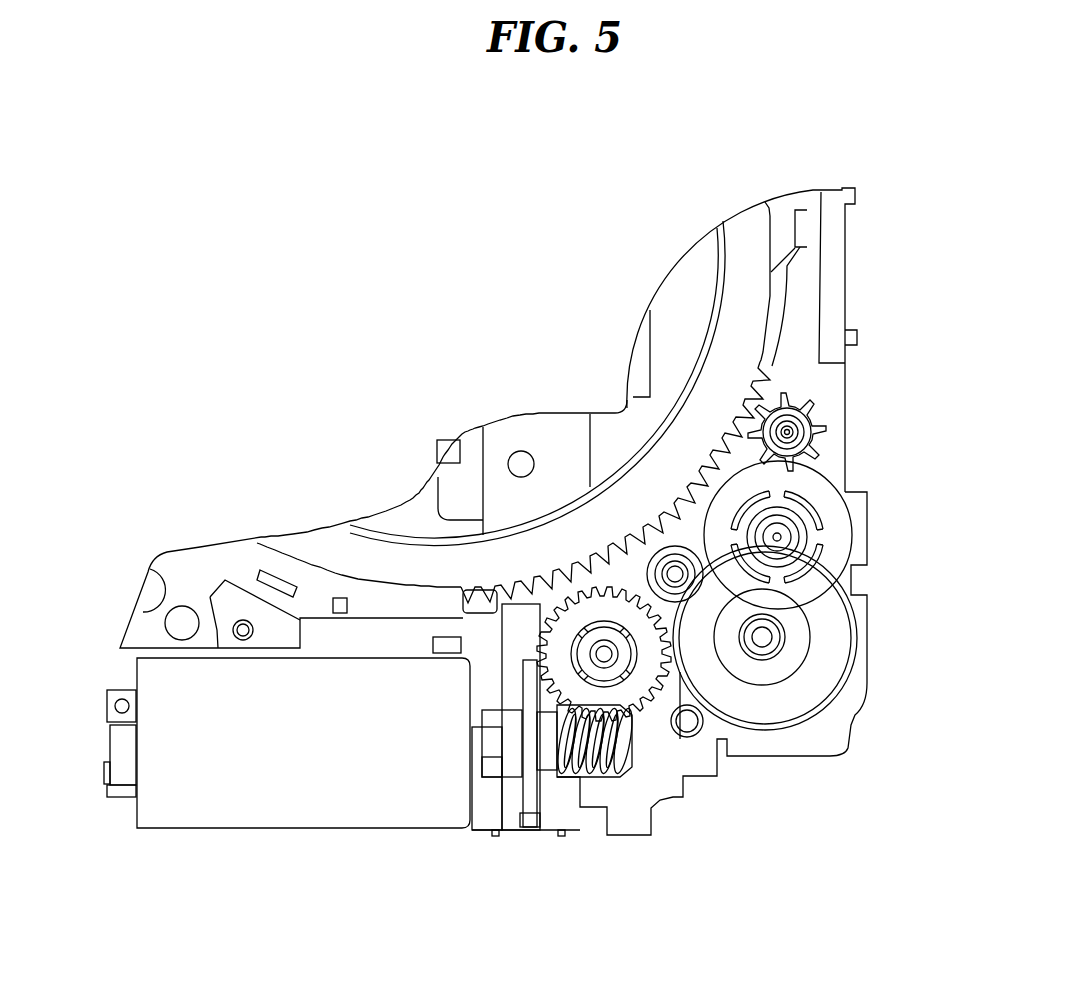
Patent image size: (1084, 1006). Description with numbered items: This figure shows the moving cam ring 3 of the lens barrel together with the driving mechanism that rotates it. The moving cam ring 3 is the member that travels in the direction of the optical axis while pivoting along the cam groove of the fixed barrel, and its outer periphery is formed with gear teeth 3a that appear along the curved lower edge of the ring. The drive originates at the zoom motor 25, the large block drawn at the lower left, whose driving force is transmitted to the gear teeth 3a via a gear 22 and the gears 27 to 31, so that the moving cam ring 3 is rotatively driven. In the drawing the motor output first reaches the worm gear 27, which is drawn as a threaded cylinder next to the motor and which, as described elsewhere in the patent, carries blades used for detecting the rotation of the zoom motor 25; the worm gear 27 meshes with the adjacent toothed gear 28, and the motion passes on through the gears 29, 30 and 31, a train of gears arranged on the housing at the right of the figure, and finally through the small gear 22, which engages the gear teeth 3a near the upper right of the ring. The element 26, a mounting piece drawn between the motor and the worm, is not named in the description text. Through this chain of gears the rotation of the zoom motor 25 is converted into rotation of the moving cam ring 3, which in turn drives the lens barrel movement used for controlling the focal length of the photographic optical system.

The moving cam ring 3 is at (743, 227).
The gear teeth 3a is at (668, 510).
The gear 22 is at (805, 404).
The zoom motor 25 is at (233, 788).
The bracket 26 is at (483, 800).
The worm gear 27 is at (547, 753).
The gear 28 is at (640, 683).
The gear 29 is at (630, 573).
The gear 30 is at (777, 700).
The gear 31 is at (822, 503).